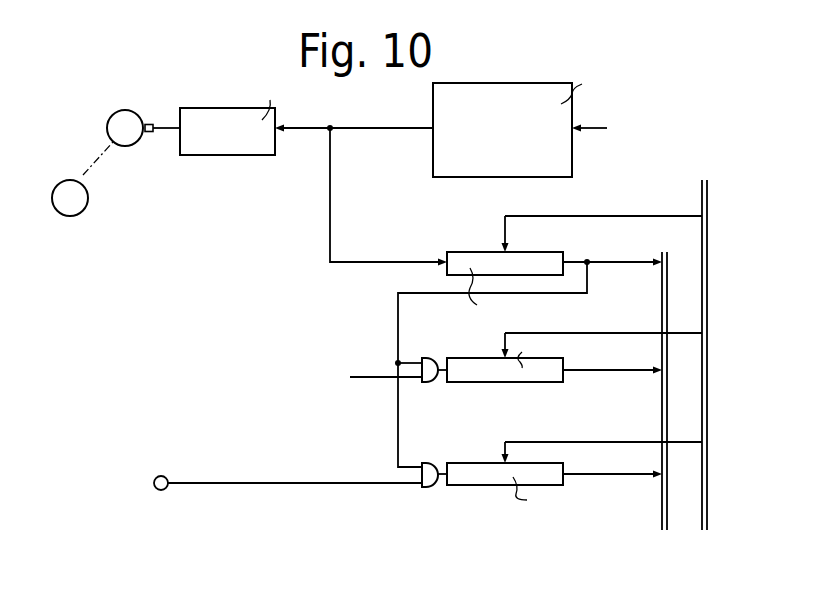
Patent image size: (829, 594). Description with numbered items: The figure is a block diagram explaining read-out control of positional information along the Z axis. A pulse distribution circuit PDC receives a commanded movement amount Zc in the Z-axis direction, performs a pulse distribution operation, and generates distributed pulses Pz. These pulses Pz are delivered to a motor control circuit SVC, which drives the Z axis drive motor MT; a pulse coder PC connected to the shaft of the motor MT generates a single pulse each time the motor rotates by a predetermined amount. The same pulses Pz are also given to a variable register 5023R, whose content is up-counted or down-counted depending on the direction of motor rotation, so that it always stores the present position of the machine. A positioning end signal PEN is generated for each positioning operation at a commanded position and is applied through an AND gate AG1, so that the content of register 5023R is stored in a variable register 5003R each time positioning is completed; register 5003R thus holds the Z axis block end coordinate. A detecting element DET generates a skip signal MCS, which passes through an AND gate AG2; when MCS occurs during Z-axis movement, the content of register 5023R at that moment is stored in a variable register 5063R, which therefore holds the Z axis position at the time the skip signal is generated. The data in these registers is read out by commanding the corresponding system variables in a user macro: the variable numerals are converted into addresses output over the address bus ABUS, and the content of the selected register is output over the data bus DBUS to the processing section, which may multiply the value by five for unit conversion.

The pulse coder PC is at (72, 190).
The Z axis drive motor MT is at (120, 133).
The motor control circuit SVC is at (222, 149).
The pulse distribution circuit PDC is at (506, 92).
The distributed pulse Pz is at (354, 116).
The commanded movement amount Zc is at (604, 132).
The variable register 5023R is at (447, 253).
The AND gate AG1 is at (424, 358).
The positioning end signal PEN is at (351, 373).
The variable register 5003R is at (465, 382).
The AND gate AG2 is at (425, 463).
The detecting element DET is at (163, 476).
The skip signal MCS is at (295, 473).
The variable register 5063R is at (463, 485).
The data bus DBUS is at (656, 410).
The address bus ABUS is at (722, 374).